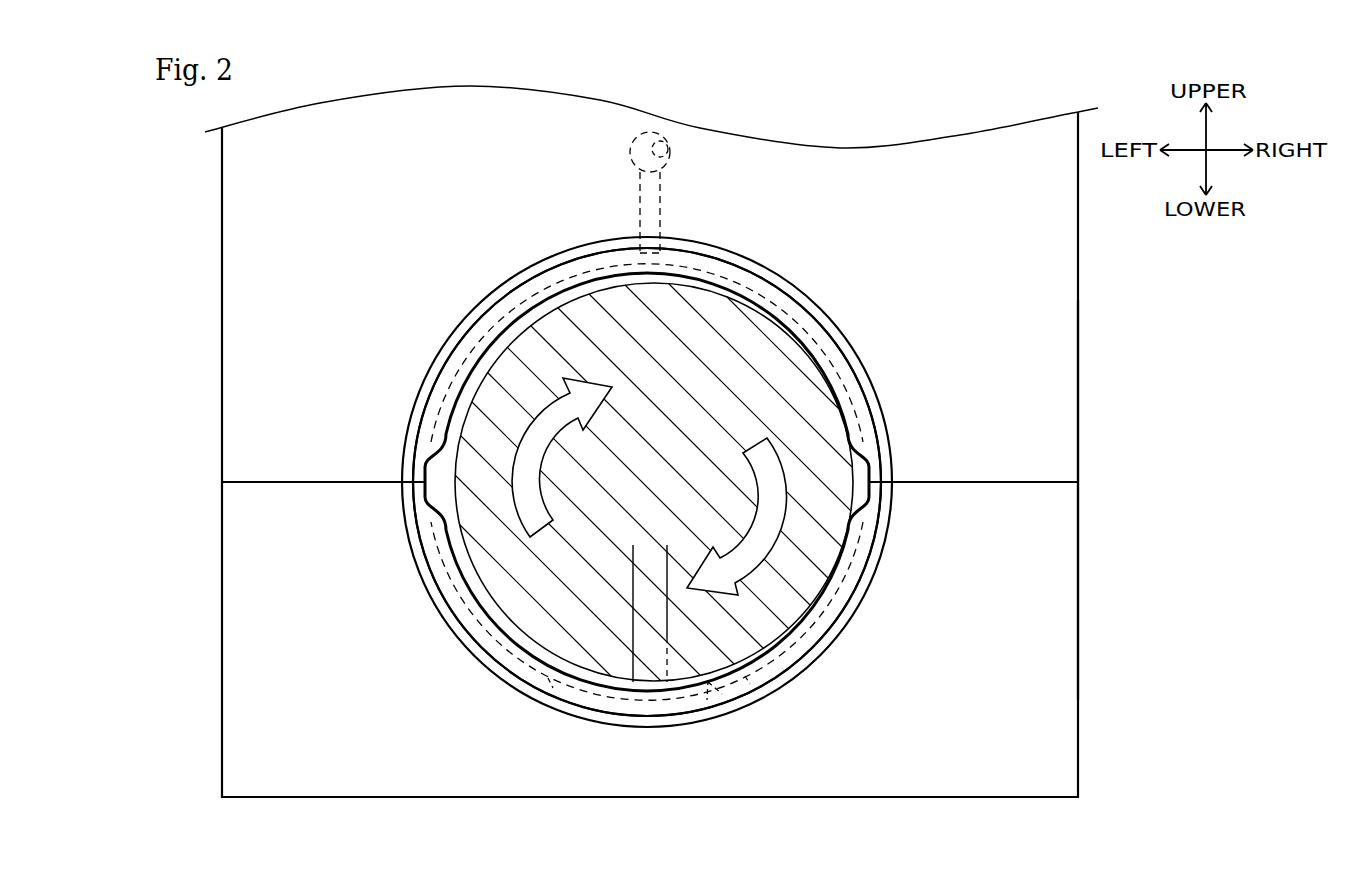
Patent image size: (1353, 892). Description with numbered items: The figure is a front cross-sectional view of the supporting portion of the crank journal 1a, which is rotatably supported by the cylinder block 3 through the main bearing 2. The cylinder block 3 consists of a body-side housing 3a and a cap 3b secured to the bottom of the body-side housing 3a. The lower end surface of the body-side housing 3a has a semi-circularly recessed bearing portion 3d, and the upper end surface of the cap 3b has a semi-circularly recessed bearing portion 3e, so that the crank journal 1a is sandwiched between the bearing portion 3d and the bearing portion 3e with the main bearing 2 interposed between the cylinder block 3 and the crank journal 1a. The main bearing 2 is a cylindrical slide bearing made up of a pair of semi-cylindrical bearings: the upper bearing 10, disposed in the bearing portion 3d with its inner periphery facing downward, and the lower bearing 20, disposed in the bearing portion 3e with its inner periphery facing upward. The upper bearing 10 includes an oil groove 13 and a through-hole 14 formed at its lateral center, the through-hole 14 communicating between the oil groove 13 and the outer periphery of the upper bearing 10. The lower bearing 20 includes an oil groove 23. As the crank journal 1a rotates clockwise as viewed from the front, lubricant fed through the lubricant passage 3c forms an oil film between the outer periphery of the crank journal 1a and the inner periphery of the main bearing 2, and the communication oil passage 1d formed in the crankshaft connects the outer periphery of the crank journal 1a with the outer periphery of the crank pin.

The main bearing 2 is at (437, 356).
The cylinder block 3 is at (1154, 471).
The body-side housing 3a is at (1065, 349).
The cap 3b is at (1065, 610).
The lubricant passage 3c is at (670, 133).
The bearing portion 3d is at (820, 335).
The bearing portion 3e is at (820, 626).
The upper bearing 10 is at (527, 292).
The oil groove 13 is at (566, 248).
The through-hole 14 is at (662, 246).
The lower bearing 20 is at (526, 675).
The oil groove 23 is at (707, 697).
The crank journal 1a is at (802, 398).
The communication oil passage 1d is at (634, 632).